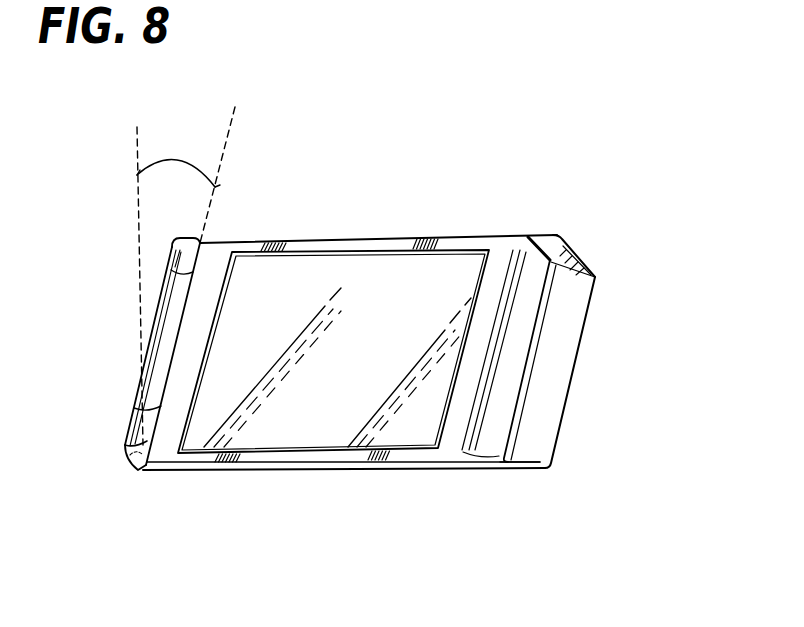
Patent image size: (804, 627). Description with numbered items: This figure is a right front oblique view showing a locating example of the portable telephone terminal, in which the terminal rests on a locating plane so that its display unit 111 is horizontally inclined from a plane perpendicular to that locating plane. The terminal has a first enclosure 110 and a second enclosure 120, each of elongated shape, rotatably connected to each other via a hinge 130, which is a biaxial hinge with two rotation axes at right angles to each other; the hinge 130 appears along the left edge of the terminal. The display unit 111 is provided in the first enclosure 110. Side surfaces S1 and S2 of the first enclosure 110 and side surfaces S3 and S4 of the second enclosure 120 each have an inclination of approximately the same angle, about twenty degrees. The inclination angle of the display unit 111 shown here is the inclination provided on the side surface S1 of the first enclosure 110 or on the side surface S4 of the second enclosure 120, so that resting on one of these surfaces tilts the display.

The first enclosure 110 is at (527, 283).
The display unit 111 is at (376, 280).
The second enclosure 120 is at (553, 373).
The hinge 130 is at (136, 472).
The side surface S1 is at (357, 467).
The side surface S2 is at (550, 234).
The side surface S3 is at (583, 257).
The side surface S4 is at (522, 472).